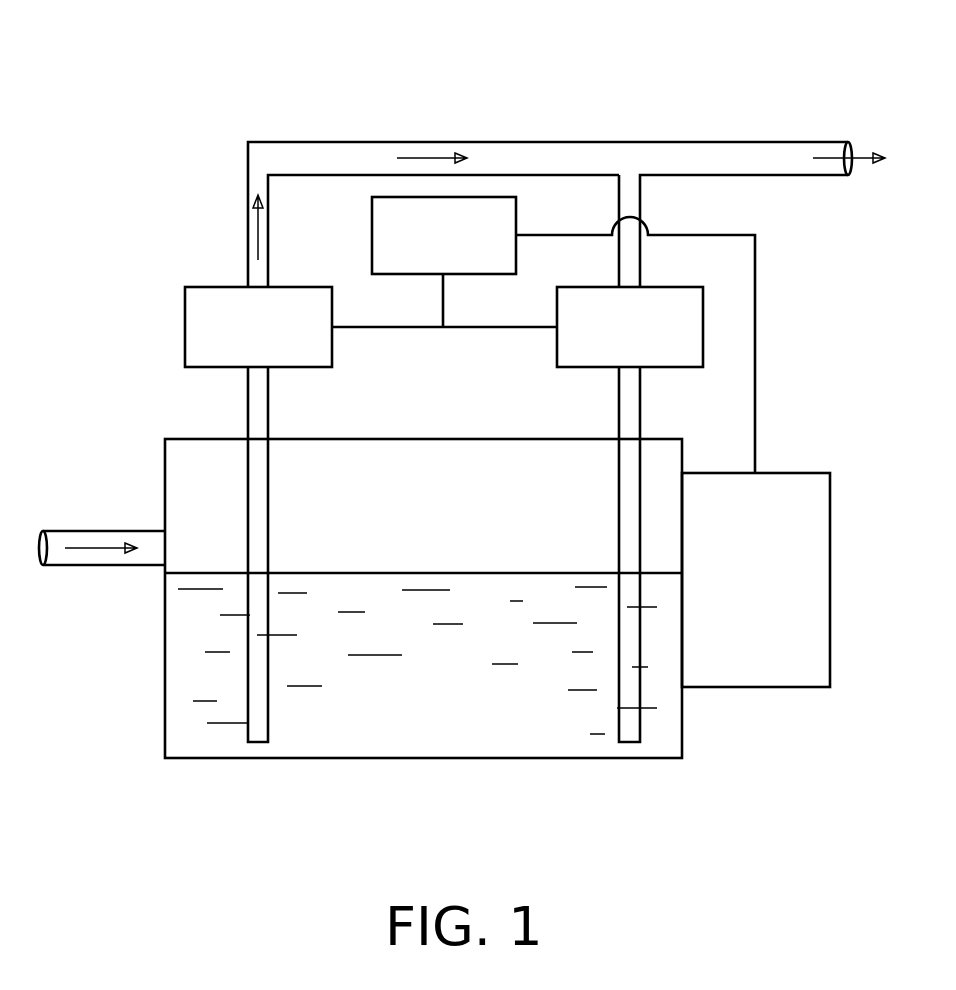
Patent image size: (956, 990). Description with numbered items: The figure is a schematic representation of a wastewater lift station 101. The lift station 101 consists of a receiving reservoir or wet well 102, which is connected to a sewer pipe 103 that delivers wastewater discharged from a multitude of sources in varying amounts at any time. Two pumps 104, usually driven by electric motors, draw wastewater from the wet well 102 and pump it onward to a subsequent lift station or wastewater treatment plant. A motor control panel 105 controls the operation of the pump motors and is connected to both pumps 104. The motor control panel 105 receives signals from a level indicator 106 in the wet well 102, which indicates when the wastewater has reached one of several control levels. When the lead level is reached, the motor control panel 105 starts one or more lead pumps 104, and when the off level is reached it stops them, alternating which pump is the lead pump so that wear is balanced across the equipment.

The wastewater lift station 101 is at (695, 50).
The wet well 102 is at (474, 445).
The sewer pipe 103 is at (93, 540).
The pump 104 is at (205, 293).
The motor control panel 105 is at (372, 231).
The level indicator 106 is at (806, 484).